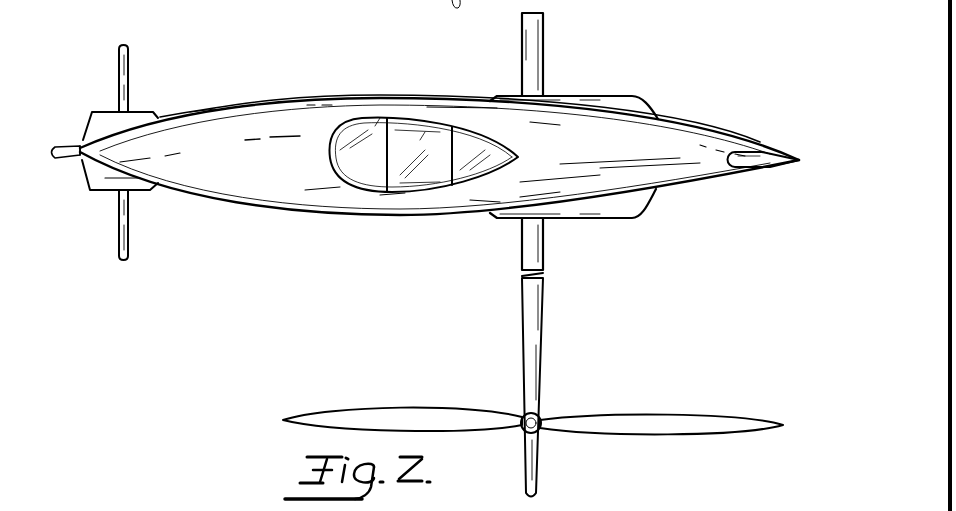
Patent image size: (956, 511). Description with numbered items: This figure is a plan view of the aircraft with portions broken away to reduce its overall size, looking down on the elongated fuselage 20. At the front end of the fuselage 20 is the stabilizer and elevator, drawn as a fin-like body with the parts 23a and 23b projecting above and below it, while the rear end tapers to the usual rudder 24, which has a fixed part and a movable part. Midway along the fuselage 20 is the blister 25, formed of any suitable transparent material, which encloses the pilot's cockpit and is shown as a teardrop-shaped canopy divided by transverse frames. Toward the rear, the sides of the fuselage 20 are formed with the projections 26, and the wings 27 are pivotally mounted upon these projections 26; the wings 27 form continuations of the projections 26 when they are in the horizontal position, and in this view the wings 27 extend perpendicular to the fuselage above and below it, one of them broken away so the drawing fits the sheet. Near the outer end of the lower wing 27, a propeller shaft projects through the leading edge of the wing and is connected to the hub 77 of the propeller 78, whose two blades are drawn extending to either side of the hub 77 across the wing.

The fuselage 20 is at (260, 190).
The bow fin 23a is at (143, 115).
The bow rudder blade 23b is at (128, 76).
The rudder 24 is at (773, 146).
The blister 25 is at (364, 182).
The projections 26 is at (617, 103).
The wings 27 is at (533, 52).
The hubs 77 is at (523, 417).
The propellers 78 is at (643, 423).